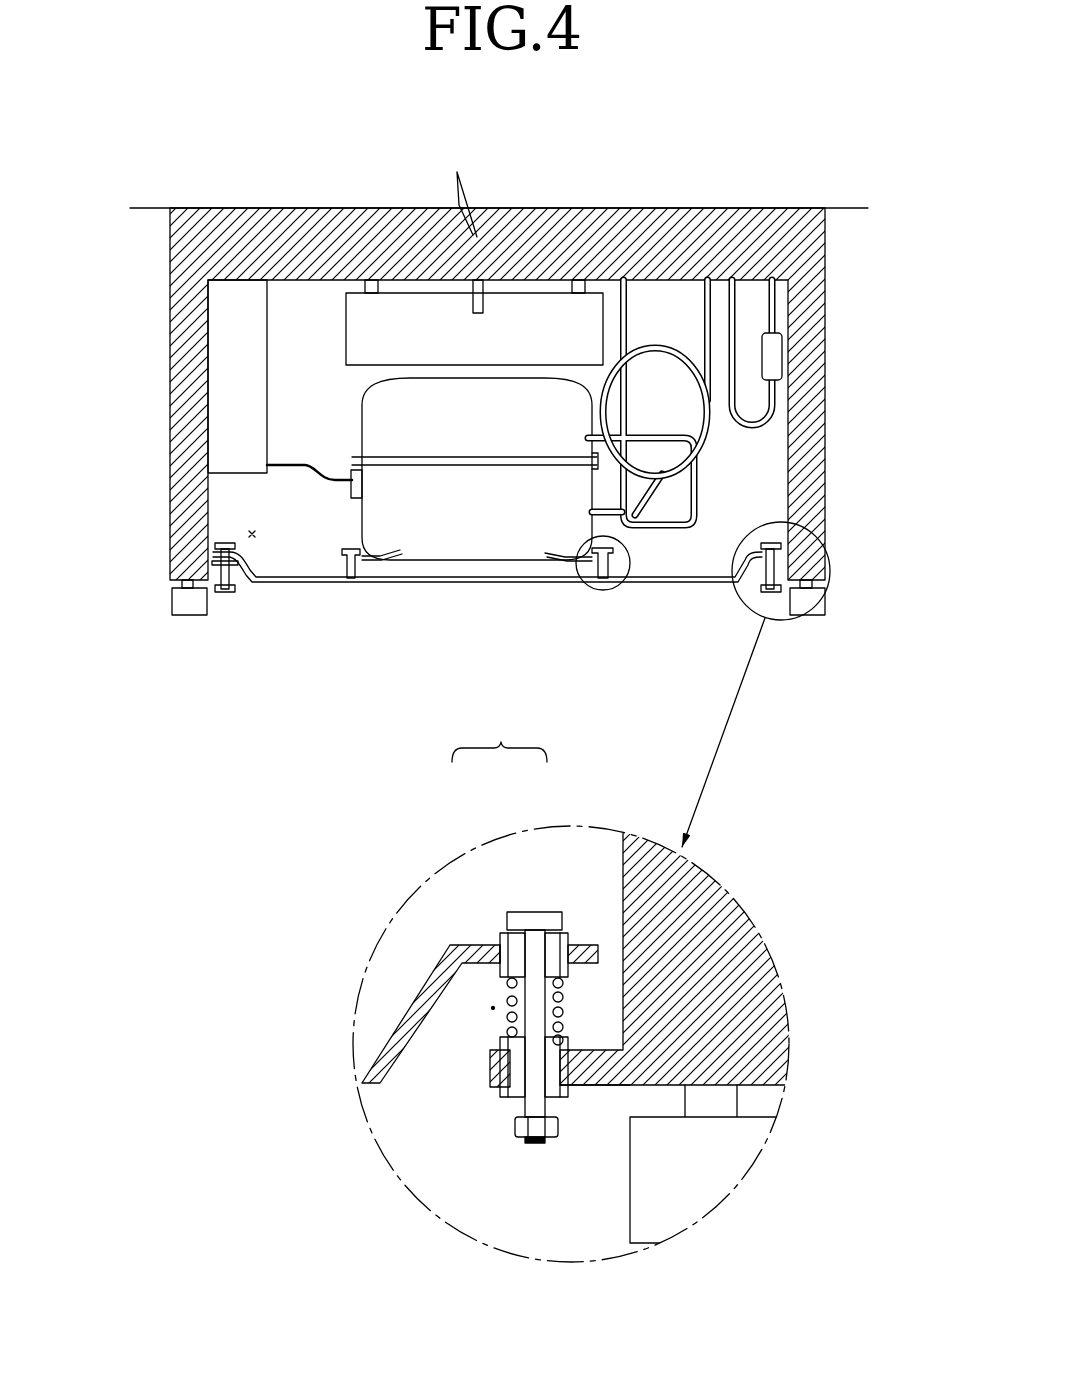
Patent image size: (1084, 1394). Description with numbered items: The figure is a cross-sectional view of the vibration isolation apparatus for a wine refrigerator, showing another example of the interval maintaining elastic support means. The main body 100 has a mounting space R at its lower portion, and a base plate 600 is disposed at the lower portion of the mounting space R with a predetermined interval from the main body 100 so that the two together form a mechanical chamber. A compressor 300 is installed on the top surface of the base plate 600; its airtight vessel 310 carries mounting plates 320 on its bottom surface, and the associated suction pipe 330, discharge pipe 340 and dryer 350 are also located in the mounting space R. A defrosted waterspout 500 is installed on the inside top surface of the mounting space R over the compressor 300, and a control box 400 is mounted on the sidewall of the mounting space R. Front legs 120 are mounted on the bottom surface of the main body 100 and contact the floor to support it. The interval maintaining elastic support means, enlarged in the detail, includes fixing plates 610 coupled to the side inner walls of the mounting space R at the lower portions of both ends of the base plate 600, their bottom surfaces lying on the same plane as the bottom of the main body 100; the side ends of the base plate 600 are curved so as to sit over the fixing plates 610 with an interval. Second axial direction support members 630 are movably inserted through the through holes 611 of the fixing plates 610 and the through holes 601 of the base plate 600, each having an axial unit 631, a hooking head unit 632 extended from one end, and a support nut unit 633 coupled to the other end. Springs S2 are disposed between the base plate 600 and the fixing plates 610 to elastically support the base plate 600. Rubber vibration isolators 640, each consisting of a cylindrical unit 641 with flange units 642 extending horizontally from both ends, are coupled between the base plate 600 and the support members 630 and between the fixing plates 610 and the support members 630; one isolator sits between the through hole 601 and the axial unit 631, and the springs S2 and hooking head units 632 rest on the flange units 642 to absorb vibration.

The main body 100 is at (830, 325).
The front legs 120 is at (175, 618).
The compressor 300 is at (350, 438).
The airtight vessel 310 is at (453, 556).
The mounting plates 320 is at (385, 570).
The suction pipe 330 is at (688, 340).
The discharge pipe 340 is at (625, 340).
The dryer 350 is at (775, 360).
The control box 400 is at (270, 328).
The defrosted waterspout 500 is at (335, 332).
The base plate 600 is at (295, 582).
The through holes 601 is at (500, 966).
The fixing plates 610 is at (592, 1097).
The through holes 611 is at (520, 1100).
The second axial direction support members 630 is at (557, 897).
The axial unit 631 is at (537, 1098).
The hooking head unit 632 is at (556, 920).
The support nut unit 633 is at (522, 1128).
The rubber vibration isolators 640 is at (499, 740).
The cylindrical unit 641 is at (532, 912).
The flange units 642 is at (500, 935).
The mounting space R is at (248, 533).
The springs S2 is at (487, 1005).